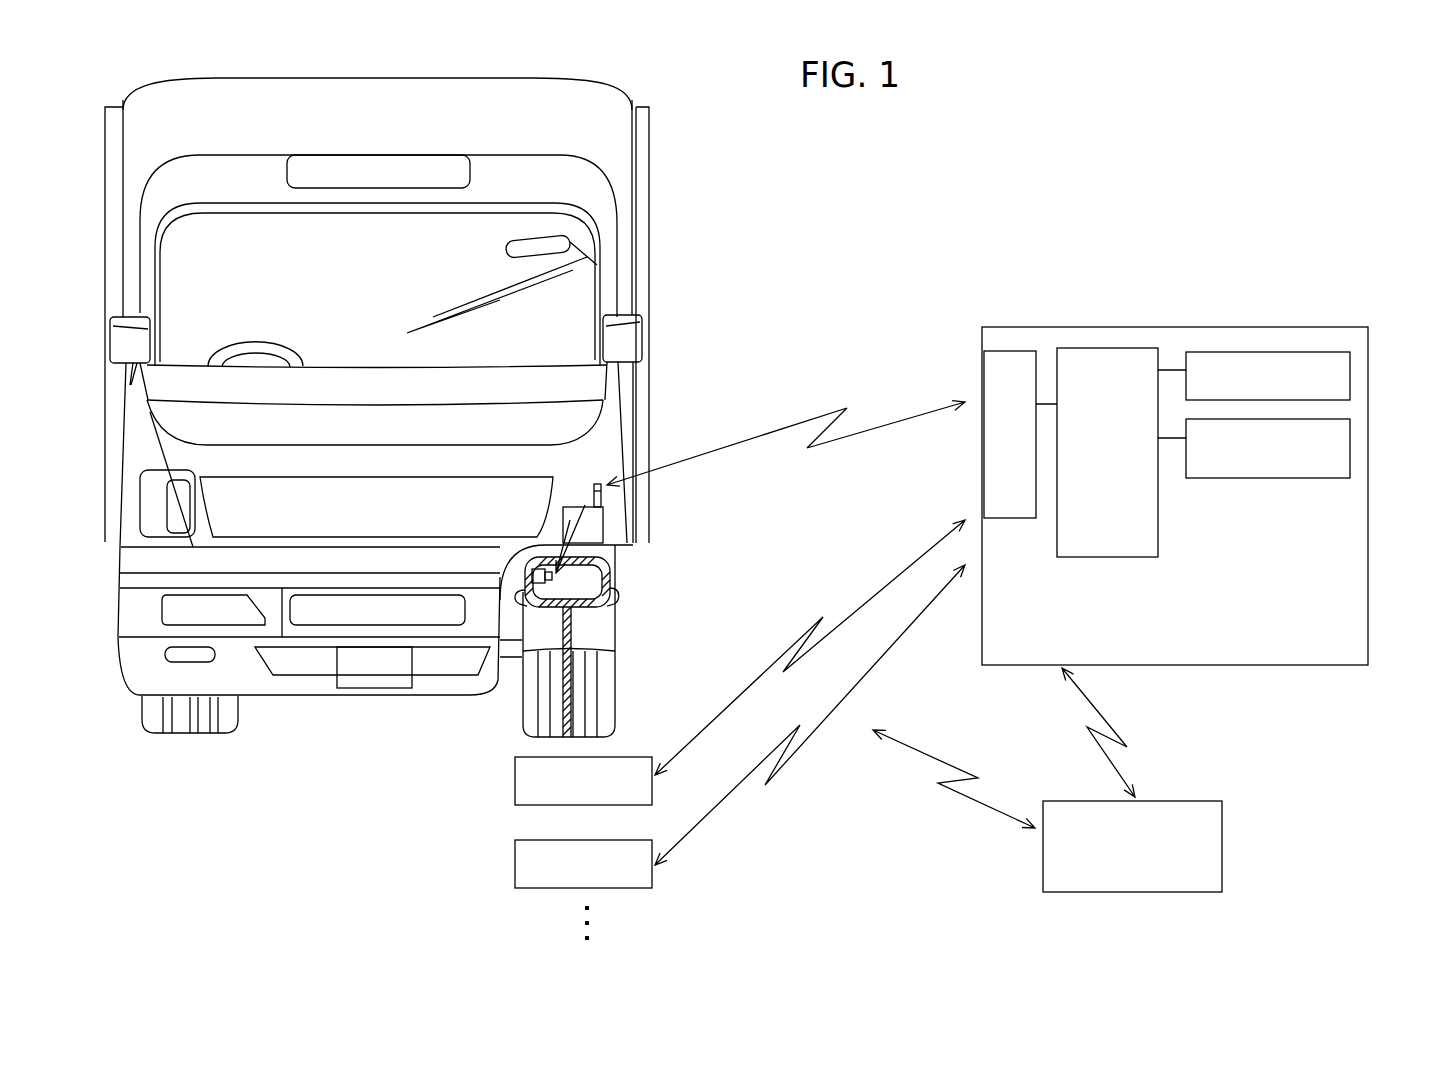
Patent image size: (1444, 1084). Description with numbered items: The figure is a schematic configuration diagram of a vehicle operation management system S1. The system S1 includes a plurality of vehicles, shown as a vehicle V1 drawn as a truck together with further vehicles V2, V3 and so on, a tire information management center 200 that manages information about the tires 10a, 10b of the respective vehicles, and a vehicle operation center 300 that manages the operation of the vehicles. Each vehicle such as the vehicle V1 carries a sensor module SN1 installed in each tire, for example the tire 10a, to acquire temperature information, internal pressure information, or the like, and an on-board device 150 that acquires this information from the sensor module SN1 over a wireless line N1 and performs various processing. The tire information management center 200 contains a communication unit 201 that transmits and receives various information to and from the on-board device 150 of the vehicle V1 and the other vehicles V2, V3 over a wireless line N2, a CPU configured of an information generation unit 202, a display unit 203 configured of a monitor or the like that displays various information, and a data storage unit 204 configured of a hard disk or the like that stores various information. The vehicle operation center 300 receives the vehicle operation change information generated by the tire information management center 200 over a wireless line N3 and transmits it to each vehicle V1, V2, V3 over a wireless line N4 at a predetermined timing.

The vehicle operation management system S1 is at (869, 217).
The vehicle V1 is at (666, 288).
The tire 10a is at (628, 670).
The tire 10b is at (152, 735).
The sensor module SN1 is at (558, 585).
The on-board device 150 is at (603, 520).
The wireless line N1 is at (574, 526).
The wireless line N2 is at (786, 633).
The vehicle V2 is at (515, 780).
The vehicle V3 is at (515, 863).
The tire information management center 200 is at (1058, 327).
The communication unit 201 is at (983, 362).
The information generation unit 202 is at (1158, 535).
The display unit 203 is at (1350, 376).
The data storage unit 204 is at (1350, 446).
The wireless line N3 is at (1109, 732).
The wireless line N4 is at (954, 779).
The vehicle operation center 300 is at (1222, 852).